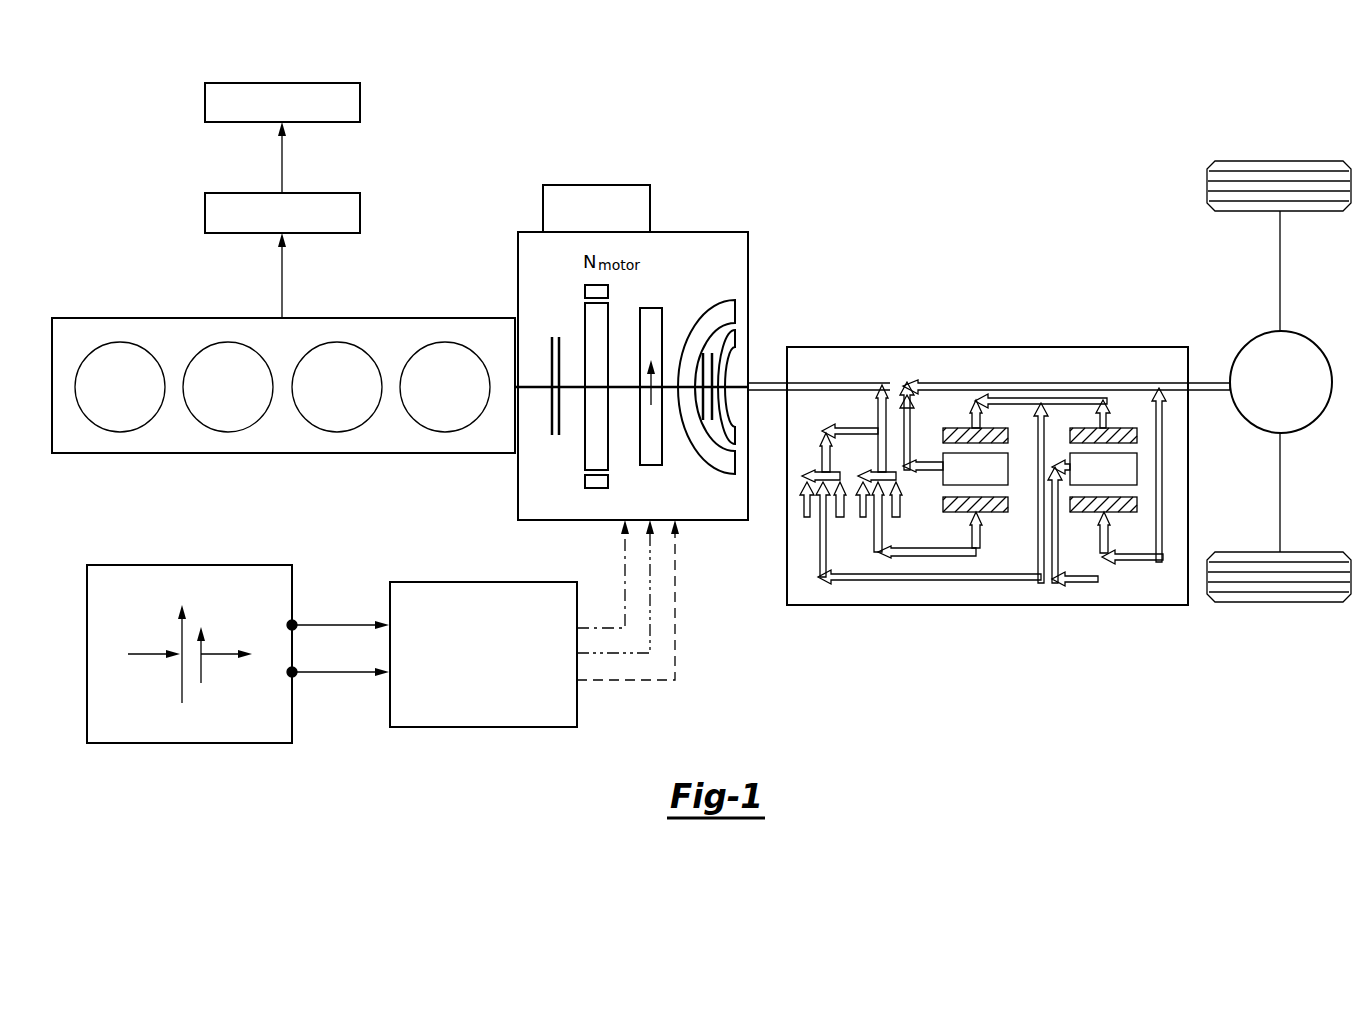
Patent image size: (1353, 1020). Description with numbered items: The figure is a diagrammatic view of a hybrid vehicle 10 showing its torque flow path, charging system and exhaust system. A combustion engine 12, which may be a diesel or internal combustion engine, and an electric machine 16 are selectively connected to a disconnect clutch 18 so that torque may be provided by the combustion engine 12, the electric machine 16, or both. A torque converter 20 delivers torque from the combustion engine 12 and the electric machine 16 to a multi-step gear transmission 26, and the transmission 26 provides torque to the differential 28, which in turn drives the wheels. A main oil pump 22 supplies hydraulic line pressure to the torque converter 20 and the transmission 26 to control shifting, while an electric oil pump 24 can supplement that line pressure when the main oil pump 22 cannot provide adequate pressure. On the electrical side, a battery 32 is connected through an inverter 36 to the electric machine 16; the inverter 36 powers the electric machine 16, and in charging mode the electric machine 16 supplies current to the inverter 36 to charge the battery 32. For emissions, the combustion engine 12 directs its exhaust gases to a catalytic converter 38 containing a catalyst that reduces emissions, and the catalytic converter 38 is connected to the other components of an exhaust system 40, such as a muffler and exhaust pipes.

The hybrid vehicle 10 is at (815, 168).
The combustion engine 12 is at (156, 318).
The electric machine 16 is at (585, 322).
The disconnect clutch 18 is at (552, 422).
The torque converter 20 is at (713, 453).
The main oil pump 22 is at (651, 465).
The electric oil pump 24 is at (650, 210).
The multi-step gear transmission 26 is at (987, 347).
The differential 28 is at (1258, 338).
The battery 32 is at (190, 745).
The inverter 36 is at (483, 727).
The catalytic converter 38 is at (360, 212).
The exhaust system 40 is at (360, 101).